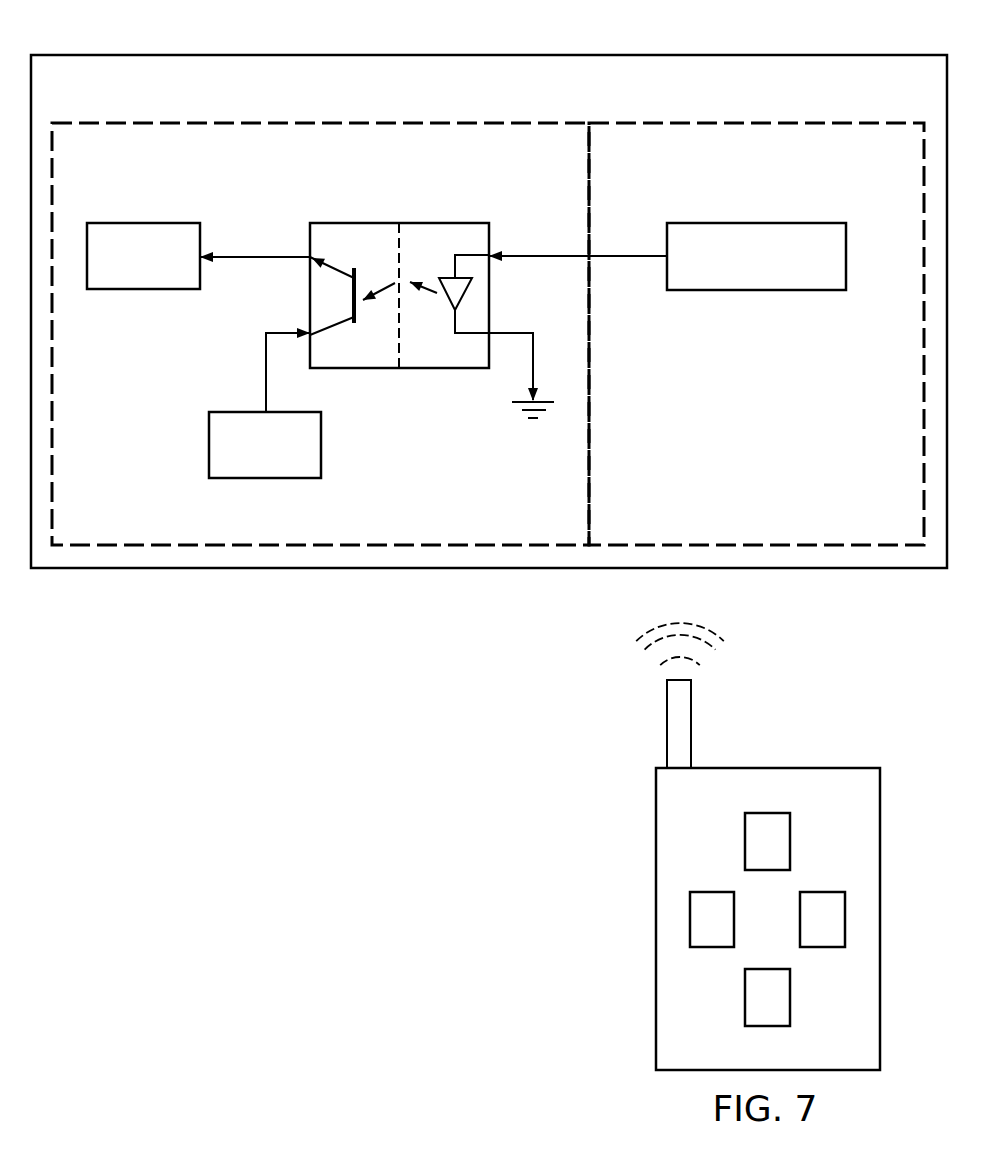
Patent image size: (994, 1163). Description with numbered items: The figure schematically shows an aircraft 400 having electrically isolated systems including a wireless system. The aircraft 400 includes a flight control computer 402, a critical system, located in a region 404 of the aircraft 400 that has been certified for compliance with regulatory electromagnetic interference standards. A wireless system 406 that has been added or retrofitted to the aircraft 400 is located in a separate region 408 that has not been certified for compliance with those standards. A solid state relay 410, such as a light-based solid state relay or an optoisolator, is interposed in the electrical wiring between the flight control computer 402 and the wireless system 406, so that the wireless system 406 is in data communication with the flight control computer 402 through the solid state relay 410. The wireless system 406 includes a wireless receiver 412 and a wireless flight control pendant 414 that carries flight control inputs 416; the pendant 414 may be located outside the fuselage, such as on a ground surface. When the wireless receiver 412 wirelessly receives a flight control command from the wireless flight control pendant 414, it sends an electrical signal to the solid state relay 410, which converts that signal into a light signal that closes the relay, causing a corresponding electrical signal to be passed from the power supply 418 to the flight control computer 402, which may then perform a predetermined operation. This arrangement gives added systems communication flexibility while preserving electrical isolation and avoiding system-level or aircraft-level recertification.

The aircraft 400 is at (488, 55).
The flight control computer 402 is at (141, 223).
The region 404 is at (303, 122).
The wireless system 406 is at (756, 247).
The region 408 is at (780, 122).
The solid state relay 410 is at (382, 223).
The wireless receiver 412 is at (756, 290).
The wireless flight control pendant 414 is at (758, 846).
The flight control inputs 416 is at (822, 856).
The power supply 418 is at (209, 445).